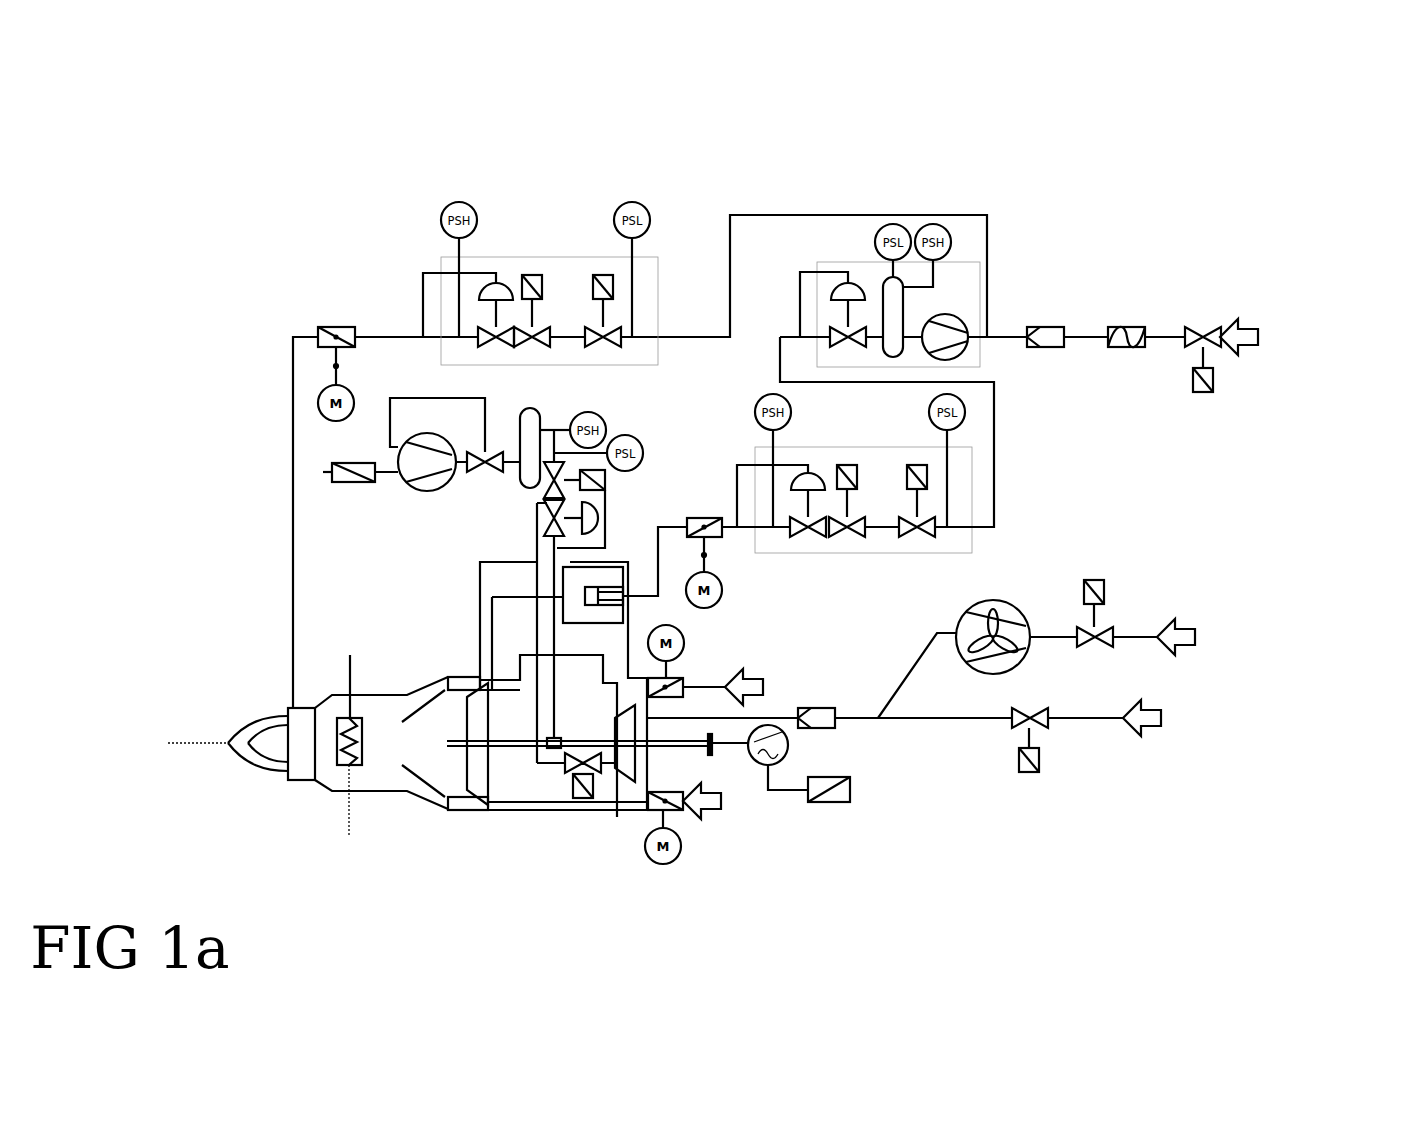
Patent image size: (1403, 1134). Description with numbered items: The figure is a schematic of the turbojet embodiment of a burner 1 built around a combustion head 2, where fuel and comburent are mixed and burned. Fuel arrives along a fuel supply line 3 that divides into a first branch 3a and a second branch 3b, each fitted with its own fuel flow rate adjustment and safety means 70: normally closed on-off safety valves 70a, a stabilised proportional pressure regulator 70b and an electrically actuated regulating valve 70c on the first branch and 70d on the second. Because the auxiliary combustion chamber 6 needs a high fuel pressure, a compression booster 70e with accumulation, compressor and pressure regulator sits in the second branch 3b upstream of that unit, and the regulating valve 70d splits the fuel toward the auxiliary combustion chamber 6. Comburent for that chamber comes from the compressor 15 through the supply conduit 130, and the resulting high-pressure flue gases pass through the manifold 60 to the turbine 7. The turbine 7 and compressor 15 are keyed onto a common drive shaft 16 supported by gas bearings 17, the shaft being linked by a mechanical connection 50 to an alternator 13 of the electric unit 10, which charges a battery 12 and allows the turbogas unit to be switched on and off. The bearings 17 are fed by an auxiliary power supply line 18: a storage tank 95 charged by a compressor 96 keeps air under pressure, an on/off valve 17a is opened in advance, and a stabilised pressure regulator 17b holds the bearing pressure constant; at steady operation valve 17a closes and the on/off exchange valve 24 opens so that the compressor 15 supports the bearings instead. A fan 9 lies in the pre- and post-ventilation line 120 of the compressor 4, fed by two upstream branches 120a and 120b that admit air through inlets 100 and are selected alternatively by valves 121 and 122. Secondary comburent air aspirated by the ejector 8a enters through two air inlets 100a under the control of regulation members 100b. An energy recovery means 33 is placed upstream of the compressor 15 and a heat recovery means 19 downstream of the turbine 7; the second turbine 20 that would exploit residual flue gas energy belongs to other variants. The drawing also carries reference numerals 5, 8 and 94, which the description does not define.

The burner 1 is at (1300, 133).
The combustion head 2 is at (230, 720).
The fuel supply line 3 is at (1170, 328).
The first branch 3a is at (733, 208).
The second branch 3b is at (672, 516).
The compressor 4 is at (405, 681).
The motor-operated valve 5 is at (675, 637).
The auxiliary combustion chamber 6 is at (626, 553).
The turbine 7 is at (482, 803).
The combustion chamber 8 is at (511, 683).
The ejector 8a is at (456, 687).
The fan 9 is at (996, 610).
The electric unit 10 is at (910, 762).
The battery 12 is at (844, 806).
The alternator 13 is at (715, 760).
The compressor 15 is at (617, 780).
The drive shaft 16 is at (530, 755).
The gas bearings 17 is at (553, 755).
The on/off valve 17a is at (541, 488).
The stabilised pressure regulator 17b is at (533, 537).
The auxiliary power supply line 18 is at (562, 413).
The heat recovery means 19 is at (343, 768).
The second turbine 20 is at (515, 755).
The on/off exchange valve 24 is at (584, 802).
The energy recovery means 33 is at (866, 792).
The mechanical connection 50 is at (773, 770).
The manifold 60 is at (500, 594).
The fuel flow rate adjustment and safety means 70 is at (1070, 240).
The on-off safety valves 70a is at (593, 248).
The stabilised proportional pressure regulator 70b is at (497, 248).
The electrically actuated regulating valve 70c is at (380, 308).
The electrically actuated regulating valve 70d is at (720, 560).
The compression booster 70e is at (957, 250).
The check valve 94 is at (337, 468).
The storage tank 95 is at (528, 406).
The compressor 96 is at (413, 415).
The inlets 100 is at (1215, 618).
The air inlet 100a is at (775, 679).
The regulation members 100b is at (698, 668).
The pre- and post-ventilation line 120 is at (868, 714).
The first ventilation branch 120a is at (1137, 628).
The second ventilation branch 120b is at (1090, 728).
The valve 121 is at (1080, 620).
The valve 122 is at (1018, 738).
The supply conduit 130 is at (608, 637).